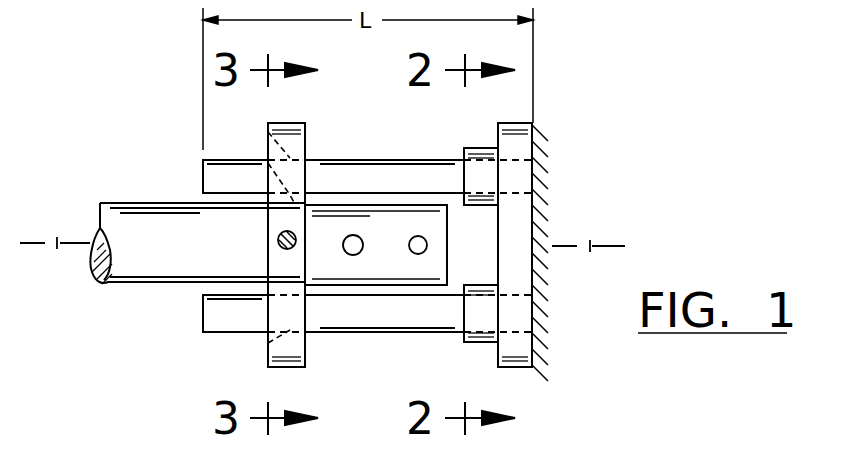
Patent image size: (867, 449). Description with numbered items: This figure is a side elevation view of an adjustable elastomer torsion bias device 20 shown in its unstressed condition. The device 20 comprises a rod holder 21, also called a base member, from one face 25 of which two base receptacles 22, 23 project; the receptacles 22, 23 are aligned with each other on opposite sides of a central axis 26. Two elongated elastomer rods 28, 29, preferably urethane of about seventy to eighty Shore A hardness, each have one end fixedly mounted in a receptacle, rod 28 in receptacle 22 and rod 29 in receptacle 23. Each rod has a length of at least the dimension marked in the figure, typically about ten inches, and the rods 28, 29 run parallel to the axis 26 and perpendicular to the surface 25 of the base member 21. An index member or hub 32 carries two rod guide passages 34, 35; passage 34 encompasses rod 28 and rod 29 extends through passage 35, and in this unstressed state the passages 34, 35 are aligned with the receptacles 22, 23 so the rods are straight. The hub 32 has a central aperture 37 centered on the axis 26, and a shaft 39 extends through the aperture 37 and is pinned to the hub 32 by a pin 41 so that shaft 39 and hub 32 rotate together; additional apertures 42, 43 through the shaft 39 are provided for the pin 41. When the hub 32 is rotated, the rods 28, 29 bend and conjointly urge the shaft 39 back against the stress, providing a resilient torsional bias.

The adjustable elastomer torsion bias device 20 is at (388, 140).
The rod holder 21 is at (517, 224).
The base receptacle 22 is at (483, 147).
The base receptacle 23 is at (478, 320).
The face 25 is at (492, 264).
The central axis 26 is at (57, 240).
The elastomer rod 28 is at (445, 172).
The elastomer rod 29 is at (400, 318).
The index hub 32 is at (300, 144).
The rod guide passage 34 is at (268, 132).
The rod guide passage 35 is at (268, 343).
The central aperture 37 is at (268, 163).
The shaft 39 is at (150, 285).
The pin 41 is at (277, 240).
The aperture 42 is at (356, 250).
The aperture 43 is at (415, 244).